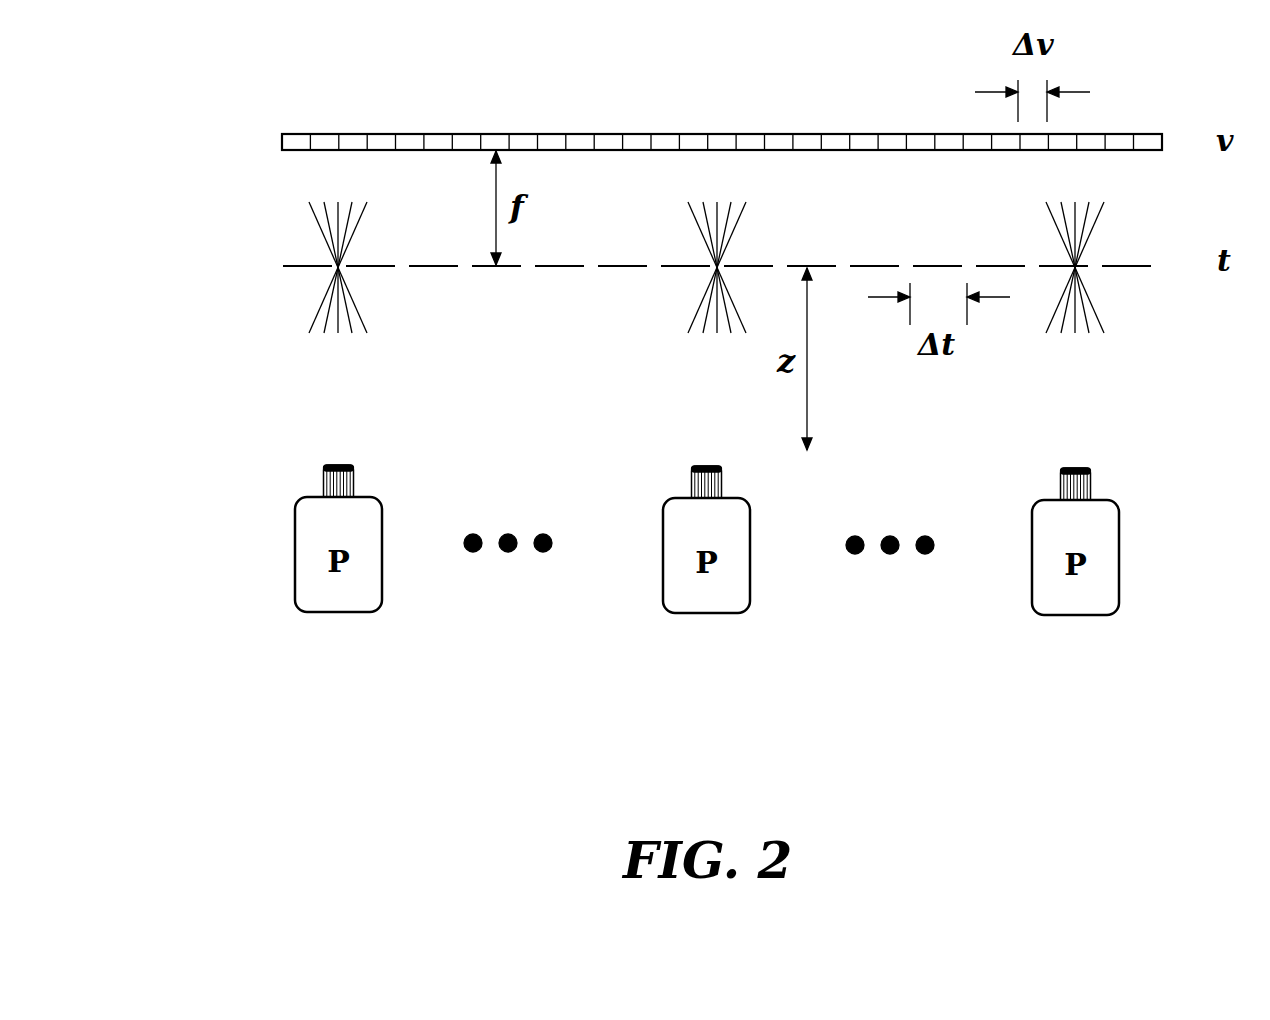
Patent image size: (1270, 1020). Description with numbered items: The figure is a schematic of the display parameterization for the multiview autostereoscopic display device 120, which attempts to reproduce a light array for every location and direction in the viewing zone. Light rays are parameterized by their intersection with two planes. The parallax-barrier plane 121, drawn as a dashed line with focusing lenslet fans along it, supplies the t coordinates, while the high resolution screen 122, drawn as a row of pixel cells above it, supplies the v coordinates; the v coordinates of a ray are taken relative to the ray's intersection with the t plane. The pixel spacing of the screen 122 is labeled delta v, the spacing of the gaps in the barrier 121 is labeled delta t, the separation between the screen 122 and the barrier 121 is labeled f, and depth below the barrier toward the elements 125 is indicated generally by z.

The multiview autostereoscopic display device 120 is at (267, 150).
The parallax-barrier plane 121 is at (1138, 260).
The high resolution screen 122 is at (360, 133).
The pixel detector 125 is at (1118, 530).